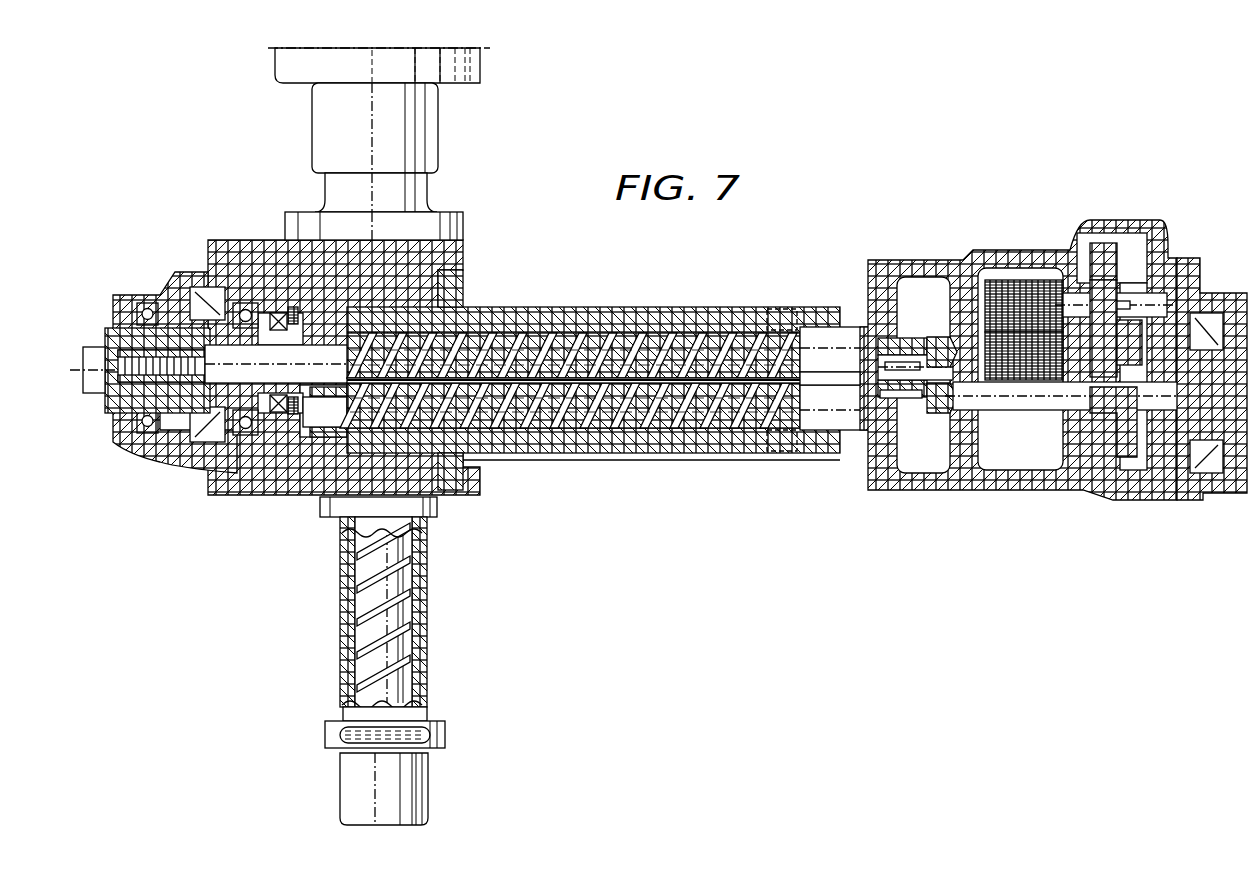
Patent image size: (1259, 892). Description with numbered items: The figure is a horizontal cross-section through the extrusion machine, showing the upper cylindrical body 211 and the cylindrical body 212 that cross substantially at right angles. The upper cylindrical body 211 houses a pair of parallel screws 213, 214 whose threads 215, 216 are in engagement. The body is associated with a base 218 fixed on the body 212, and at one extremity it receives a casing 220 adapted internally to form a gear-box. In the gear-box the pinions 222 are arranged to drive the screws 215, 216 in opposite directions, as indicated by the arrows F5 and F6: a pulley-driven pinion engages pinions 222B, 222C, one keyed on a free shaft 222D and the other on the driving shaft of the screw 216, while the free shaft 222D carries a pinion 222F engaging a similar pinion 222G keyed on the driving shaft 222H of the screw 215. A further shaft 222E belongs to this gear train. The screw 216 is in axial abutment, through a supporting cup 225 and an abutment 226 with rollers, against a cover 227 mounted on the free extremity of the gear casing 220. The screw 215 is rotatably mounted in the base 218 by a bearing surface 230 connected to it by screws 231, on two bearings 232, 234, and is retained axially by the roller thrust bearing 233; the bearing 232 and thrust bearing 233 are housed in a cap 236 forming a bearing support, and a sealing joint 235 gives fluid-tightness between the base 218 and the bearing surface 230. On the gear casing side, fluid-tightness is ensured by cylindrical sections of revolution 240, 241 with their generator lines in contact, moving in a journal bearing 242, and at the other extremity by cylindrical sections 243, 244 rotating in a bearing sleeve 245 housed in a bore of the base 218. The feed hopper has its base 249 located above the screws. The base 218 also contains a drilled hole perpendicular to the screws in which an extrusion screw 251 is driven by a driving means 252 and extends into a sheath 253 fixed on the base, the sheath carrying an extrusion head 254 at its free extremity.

The upper cylindrical body 211 is at (670, 464).
The cylindrical body 212 is at (338, 600).
The screw 213 is at (502, 350).
The screw 214 is at (525, 410).
The thread 215 is at (714, 348).
The thread 216 is at (707, 412).
The base 218 is at (277, 482).
The casing 220 is at (967, 476).
The pinions 222 is at (1047, 270).
The pinion 222B is at (1103, 250).
The pinion 222C is at (1130, 448).
The free shaft 222D is at (1152, 298).
The output shaft 222E is at (1053, 418).
The pinion 222F is at (1003, 300).
The pinion 222G is at (1017, 360).
The driving shaft 222H is at (937, 342).
The supporting cup 225 is at (1210, 428).
The abutment with rollers 226 is at (1210, 316).
The cover 227 is at (1245, 487).
The bearing surface 230 is at (128, 398).
The screws 231 is at (122, 347).
The bearing 232 is at (150, 303).
The roller thrust bearing 233 is at (205, 288).
The bearing 234 is at (256, 300).
The sealing joint 235 is at (290, 252).
The cap 236 is at (182, 455).
The cylindrical section of revolution 240 is at (845, 333).
The cylindrical section of revolution 241 is at (857, 413).
The journal bearing 242 is at (836, 433).
The cylindrical section of revolution 243 is at (300, 352).
The cylindrical section of revolution 244 is at (323, 415).
The bearing sleeve 245 is at (343, 338).
The base of feed hopper 249 is at (778, 328).
The extrusion screw 251 is at (406, 676).
The driving means 252 is at (272, 74).
The sheath 253 is at (347, 633).
The extrusion head 254 is at (358, 788).
The arrow F5 is at (627, 366).
The arrow F6 is at (637, 397).